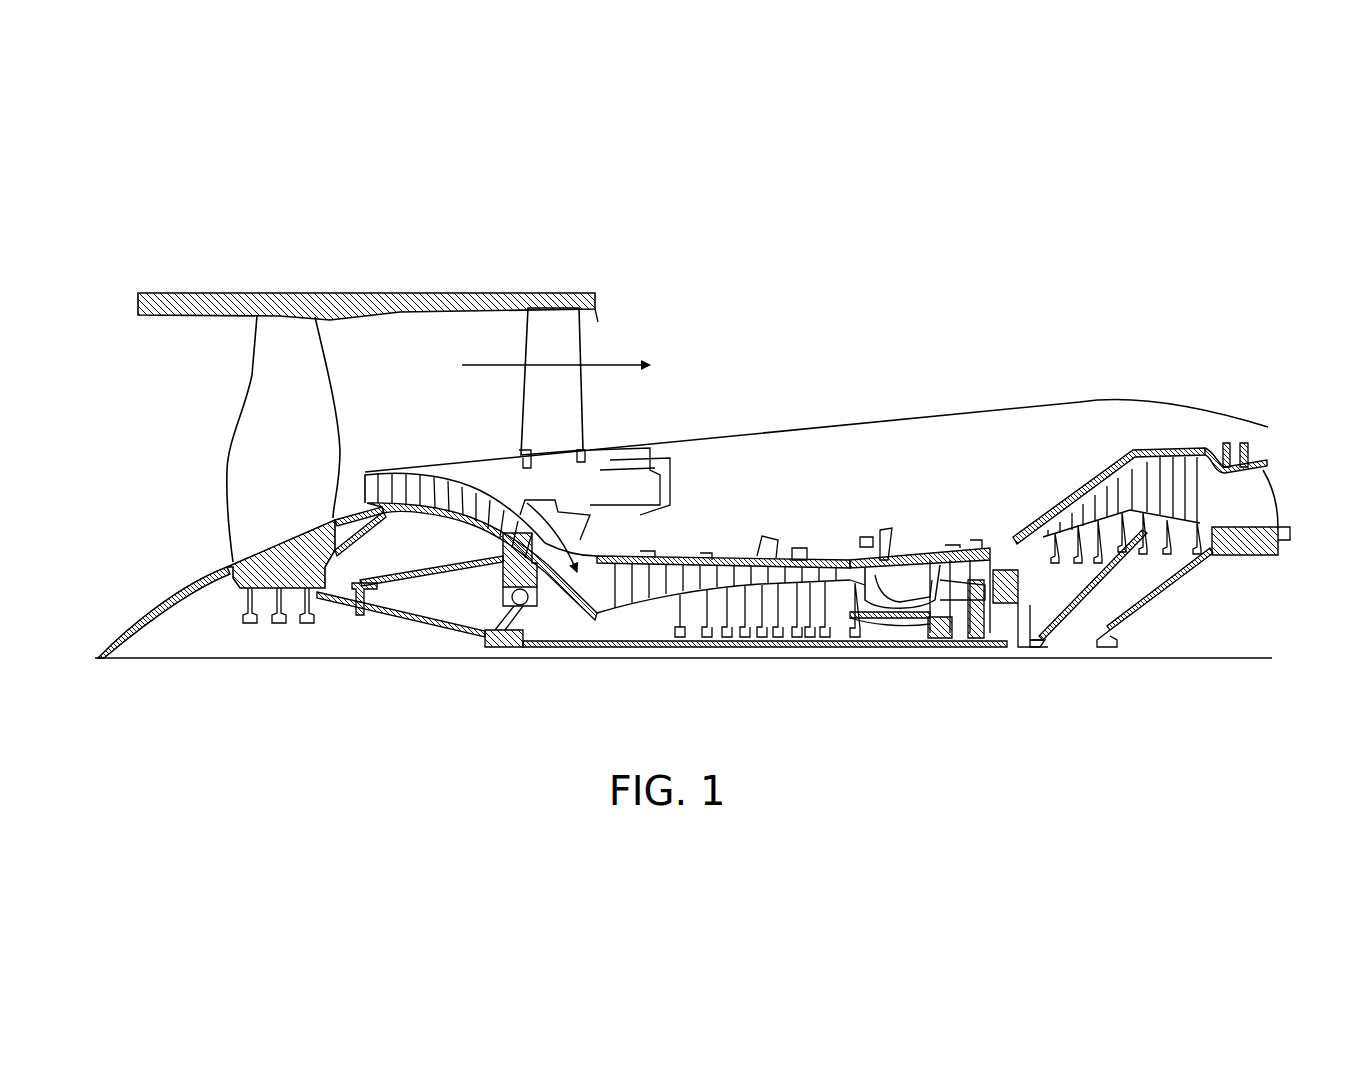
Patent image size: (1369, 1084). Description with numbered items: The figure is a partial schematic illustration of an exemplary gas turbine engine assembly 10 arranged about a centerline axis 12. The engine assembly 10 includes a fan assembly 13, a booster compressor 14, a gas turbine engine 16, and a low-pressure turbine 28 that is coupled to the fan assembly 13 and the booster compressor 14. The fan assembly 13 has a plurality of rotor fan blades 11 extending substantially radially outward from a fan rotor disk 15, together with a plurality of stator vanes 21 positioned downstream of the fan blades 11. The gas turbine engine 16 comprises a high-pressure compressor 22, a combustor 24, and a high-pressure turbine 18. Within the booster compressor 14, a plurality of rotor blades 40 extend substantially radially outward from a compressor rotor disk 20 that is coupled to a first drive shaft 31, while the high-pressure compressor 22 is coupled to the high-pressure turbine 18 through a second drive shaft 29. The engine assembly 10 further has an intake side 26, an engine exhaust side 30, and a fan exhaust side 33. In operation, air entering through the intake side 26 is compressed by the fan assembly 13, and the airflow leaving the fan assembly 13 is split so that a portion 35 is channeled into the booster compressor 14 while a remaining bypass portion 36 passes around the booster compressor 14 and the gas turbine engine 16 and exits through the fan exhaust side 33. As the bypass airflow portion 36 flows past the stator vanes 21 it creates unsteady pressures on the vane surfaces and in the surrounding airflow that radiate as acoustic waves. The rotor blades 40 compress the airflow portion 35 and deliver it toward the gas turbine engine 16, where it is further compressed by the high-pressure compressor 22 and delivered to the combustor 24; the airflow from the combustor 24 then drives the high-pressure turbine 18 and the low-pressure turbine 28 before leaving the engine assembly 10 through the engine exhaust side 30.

The gas turbine engine assembly 10 is at (917, 242).
The rotor fan blades 11 is at (318, 358).
The centerline axis 12 is at (289, 660).
The fan assembly 13 is at (226, 437).
The booster compressor 14 is at (412, 475).
The fan rotor disk 15 is at (233, 589).
The gas turbine engine 16 is at (898, 483).
The high-pressure turbine 18 is at (942, 633).
The compressor rotor disk 20 is at (392, 510).
The stator vanes 21 is at (573, 342).
The high-pressure compressor 22 is at (644, 572).
The combustor 24 is at (907, 570).
The intake side 26 is at (140, 353).
The low-pressure turbine 28 is at (1180, 447).
The second drive shaft 29 is at (885, 620).
The engine exhaust side 30 is at (1296, 461).
The first drive shaft 31 is at (503, 650).
The fan exhaust side 33 is at (598, 321).
The airflow portion 35 is at (562, 555).
The bypass airflow portion 36 is at (488, 363).
The rotor blades 40 is at (393, 478).